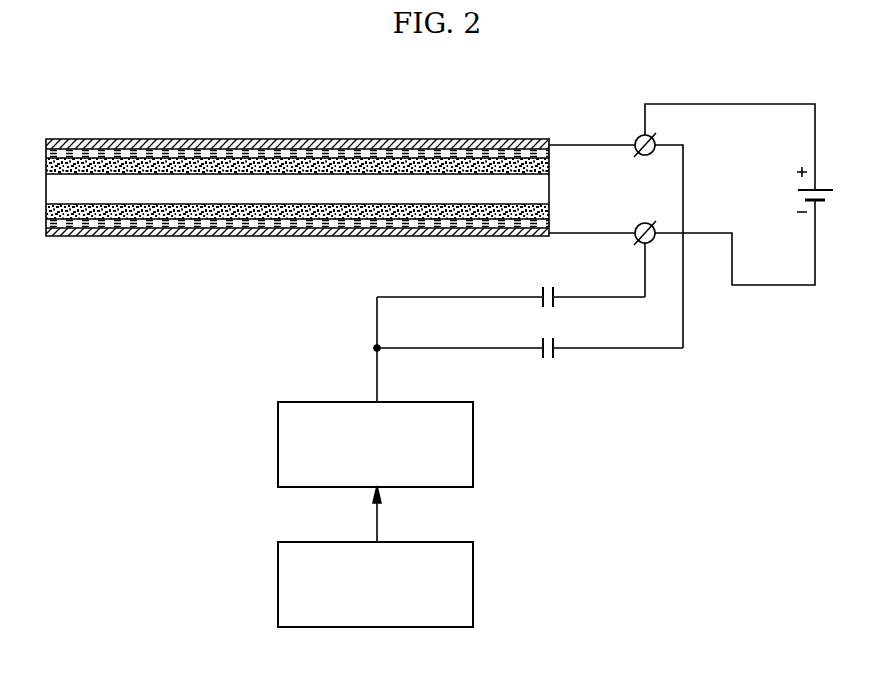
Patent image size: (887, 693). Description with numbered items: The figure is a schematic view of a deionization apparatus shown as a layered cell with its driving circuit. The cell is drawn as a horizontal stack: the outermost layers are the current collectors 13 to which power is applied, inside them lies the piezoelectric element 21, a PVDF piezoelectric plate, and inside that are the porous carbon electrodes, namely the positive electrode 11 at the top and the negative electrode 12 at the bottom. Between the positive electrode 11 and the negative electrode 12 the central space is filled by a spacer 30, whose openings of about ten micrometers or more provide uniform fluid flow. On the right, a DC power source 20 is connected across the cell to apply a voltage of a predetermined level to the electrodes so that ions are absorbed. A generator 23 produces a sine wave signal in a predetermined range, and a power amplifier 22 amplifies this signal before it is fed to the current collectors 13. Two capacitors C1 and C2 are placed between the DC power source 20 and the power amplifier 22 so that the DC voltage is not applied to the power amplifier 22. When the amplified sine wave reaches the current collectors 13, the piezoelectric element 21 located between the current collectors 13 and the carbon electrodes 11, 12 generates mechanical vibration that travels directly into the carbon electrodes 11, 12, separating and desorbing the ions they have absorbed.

The positive electrode 11 is at (247, 160).
The negative electrode 12 is at (163, 222).
The current collectors 13 is at (385, 232).
The piezoelectric element 21 is at (340, 232).
The spacer 30 is at (447, 183).
The DC power source 20 is at (820, 188).
The power amplifier 22 is at (475, 443).
The generator 23 is at (475, 583).
The capacitor C1 is at (511, 289).
The capacitor C2 is at (530, 340).